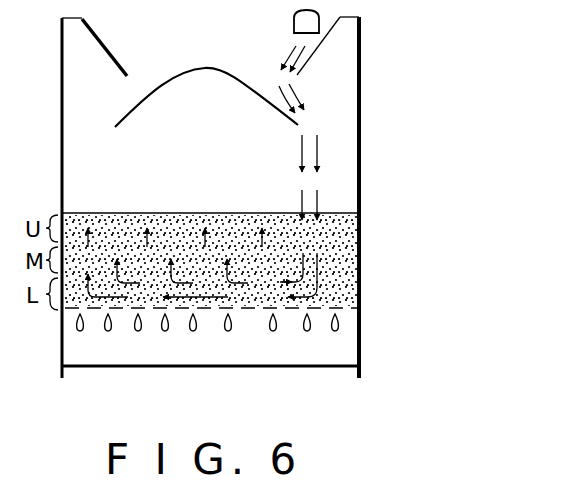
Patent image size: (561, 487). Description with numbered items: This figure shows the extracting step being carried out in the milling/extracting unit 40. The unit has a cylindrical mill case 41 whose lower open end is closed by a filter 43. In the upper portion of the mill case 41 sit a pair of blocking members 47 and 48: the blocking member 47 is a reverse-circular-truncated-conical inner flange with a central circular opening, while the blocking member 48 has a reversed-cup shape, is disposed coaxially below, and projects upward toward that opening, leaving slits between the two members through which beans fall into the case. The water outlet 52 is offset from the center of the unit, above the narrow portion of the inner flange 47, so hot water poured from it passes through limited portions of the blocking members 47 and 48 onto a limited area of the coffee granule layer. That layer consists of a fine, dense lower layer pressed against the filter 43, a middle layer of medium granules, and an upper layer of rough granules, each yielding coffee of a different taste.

The milling/extracting unit 40 is at (372, 88).
The mill case 41 is at (361, 183).
The filter 43 is at (317, 308).
The blocking member 47 is at (108, 46).
The blocking member 48 is at (150, 100).
The water outlet 52 is at (293, 17).